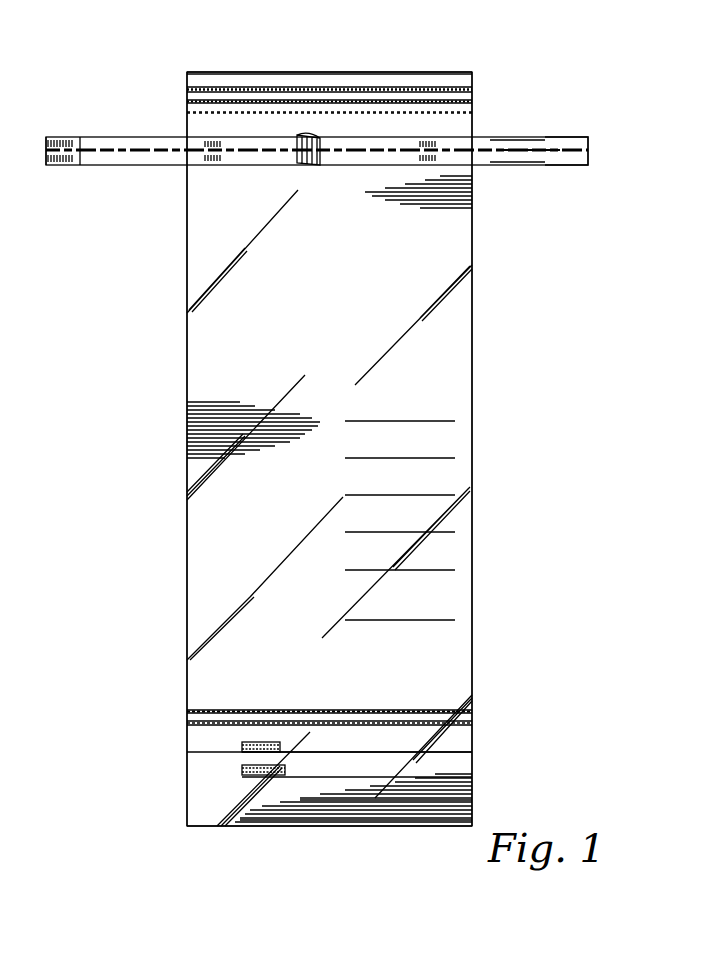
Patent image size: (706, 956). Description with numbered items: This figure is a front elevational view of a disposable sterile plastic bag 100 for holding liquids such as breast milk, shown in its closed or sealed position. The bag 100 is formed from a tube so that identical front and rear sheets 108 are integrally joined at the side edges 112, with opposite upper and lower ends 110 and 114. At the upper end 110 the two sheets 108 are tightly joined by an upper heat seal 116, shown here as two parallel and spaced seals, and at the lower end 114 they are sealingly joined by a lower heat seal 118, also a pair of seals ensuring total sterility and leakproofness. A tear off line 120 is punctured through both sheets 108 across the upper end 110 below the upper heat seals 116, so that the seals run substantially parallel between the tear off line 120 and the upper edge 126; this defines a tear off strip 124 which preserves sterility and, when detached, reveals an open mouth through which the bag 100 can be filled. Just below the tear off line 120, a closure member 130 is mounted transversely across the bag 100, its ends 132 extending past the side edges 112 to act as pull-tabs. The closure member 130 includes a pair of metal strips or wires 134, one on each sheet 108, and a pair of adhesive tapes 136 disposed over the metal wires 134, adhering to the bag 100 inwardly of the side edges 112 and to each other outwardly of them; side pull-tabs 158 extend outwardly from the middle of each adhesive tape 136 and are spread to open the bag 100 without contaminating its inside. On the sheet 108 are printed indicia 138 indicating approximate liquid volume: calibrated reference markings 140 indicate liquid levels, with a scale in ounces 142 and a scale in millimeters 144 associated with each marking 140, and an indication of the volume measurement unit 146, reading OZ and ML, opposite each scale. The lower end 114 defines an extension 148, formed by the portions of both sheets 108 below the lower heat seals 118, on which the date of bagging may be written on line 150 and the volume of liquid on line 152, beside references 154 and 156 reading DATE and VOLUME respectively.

The disposable sterile plastic bag 100 is at (590, 85).
The front and rear sheets 108 is at (455, 353).
The upper end 110 is at (187, 85).
The side edges 112 is at (187, 325).
The lower end 114 is at (460, 749).
The upper heat seal 116 is at (316, 96).
The lower heat seal 118 is at (187, 724).
The tear off line 120 is at (474, 116).
The tear off strip 124 is at (416, 92).
The upper edge 126 is at (280, 72).
The closure member 130 is at (239, 166).
The ends of the closure member 132 is at (92, 165).
The metal strips or wires 134 is at (545, 163).
The adhesive tapes 136 is at (576, 143).
The indicia 138 is at (422, 528).
The calibrated reference marking 140 is at (402, 458).
The scale of volumes in ounces 142 is at (344, 525).
The scale of volumes in millimeters 144 is at (458, 421).
The volume measurement unit indication 146 is at (458, 666).
The extension 148 is at (292, 794).
The date line 150 is at (350, 745).
The volume line 152 is at (345, 768).
The reference reading DATE 154 is at (242, 748).
The reference reading VOLUME 156 is at (242, 772).
The side pull-tabs 158 is at (320, 167).